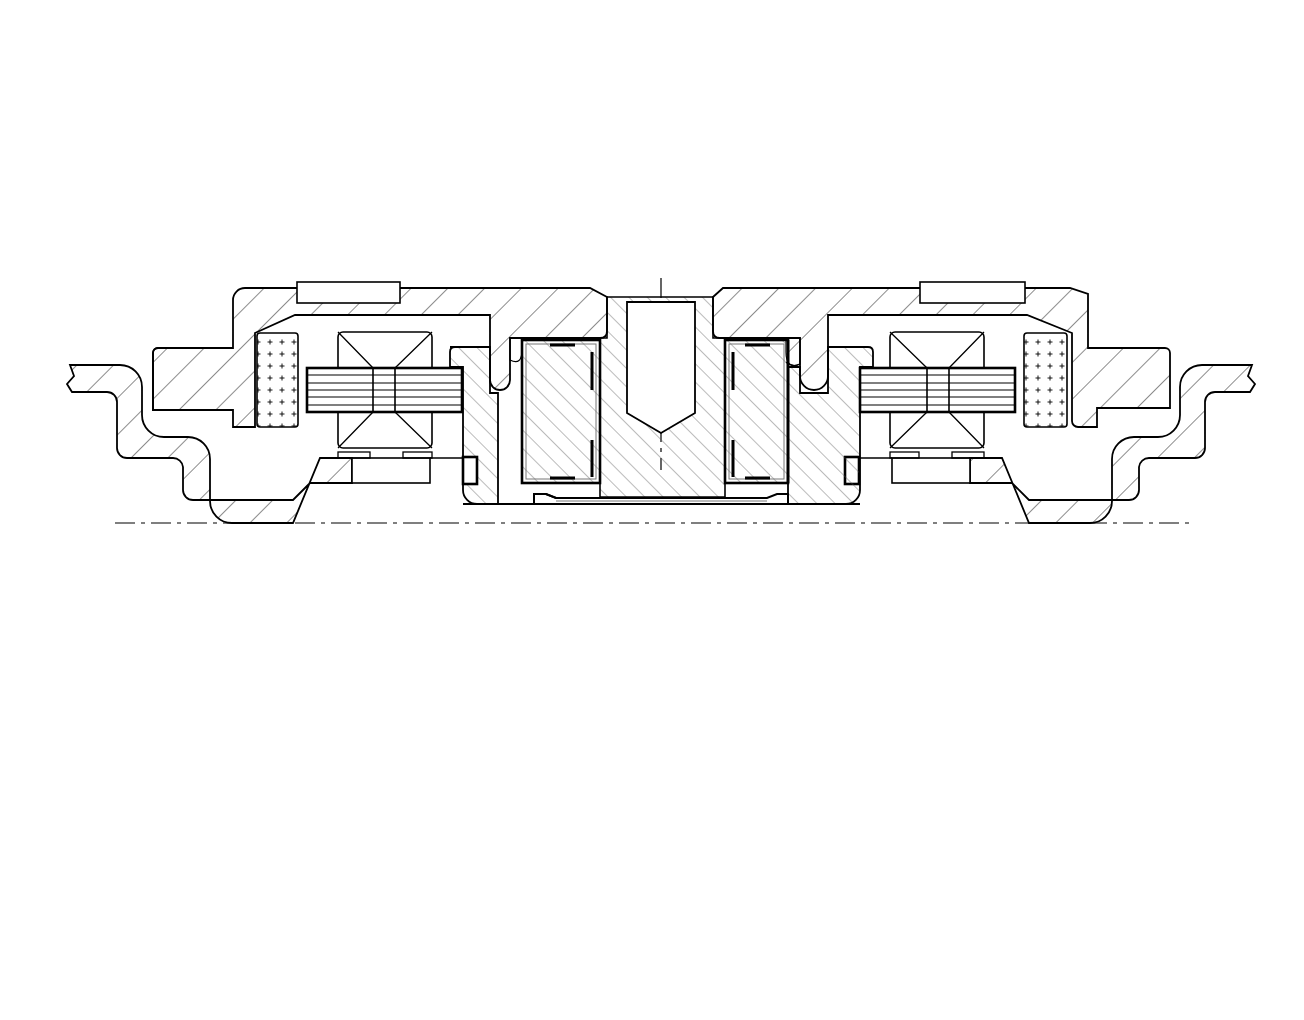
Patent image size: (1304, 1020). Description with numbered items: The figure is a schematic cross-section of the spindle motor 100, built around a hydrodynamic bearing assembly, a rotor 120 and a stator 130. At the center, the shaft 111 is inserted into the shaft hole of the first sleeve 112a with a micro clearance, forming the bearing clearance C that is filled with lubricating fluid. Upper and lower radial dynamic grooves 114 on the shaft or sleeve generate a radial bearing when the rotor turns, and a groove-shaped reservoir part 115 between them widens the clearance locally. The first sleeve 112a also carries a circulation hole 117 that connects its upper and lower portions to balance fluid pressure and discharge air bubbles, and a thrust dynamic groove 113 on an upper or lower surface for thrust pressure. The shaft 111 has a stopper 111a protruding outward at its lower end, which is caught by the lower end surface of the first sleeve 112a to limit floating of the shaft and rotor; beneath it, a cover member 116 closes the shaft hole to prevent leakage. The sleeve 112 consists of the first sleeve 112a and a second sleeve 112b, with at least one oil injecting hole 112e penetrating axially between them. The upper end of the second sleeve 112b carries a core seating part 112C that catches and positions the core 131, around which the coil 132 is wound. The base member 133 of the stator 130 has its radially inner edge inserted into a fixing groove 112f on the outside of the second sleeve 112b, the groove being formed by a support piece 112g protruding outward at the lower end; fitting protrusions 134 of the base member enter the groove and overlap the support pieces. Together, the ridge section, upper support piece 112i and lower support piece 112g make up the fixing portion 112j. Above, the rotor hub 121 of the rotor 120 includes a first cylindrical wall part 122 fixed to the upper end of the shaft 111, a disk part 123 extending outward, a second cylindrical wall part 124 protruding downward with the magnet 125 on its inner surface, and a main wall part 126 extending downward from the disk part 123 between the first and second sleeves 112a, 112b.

The spindle motor 100 is at (752, 77).
The shaft 111 is at (713, 478).
The stopper 111a is at (585, 506).
The sleeve 112 is at (738, 583).
The first sleeve 112a is at (760, 438).
The second sleeve 112b is at (790, 466).
The core seating part 112C is at (867, 357).
The oil injecting hole 112e is at (503, 452).
The fixing groove 112f is at (472, 468).
The support piece 112g is at (473, 497).
The upper support piece 112i is at (463, 388).
The fixing portion 112j is at (271, 585).
The thrust dynamic groove 113 is at (563, 338).
The radial dynamic groove 114 is at (743, 397).
The reservoir part 115 is at (620, 403).
The cover member 116 is at (647, 504).
The circulation hole 117 is at (788, 340).
The rotor 120 is at (1091, 283).
The rotor hub 121 is at (232, 195).
The first cylindrical wall part 122 is at (532, 308).
The disk part 123 is at (411, 286).
The second cylindrical wall part 124 is at (232, 349).
The magnet 125 is at (1062, 357).
The main wall part 126 is at (820, 362).
The stator 130 is at (953, 601).
The core 131 is at (982, 426).
The coil 132 is at (1003, 404).
The base member 133 is at (978, 479).
The fitting protrusion 134 is at (878, 504).
The bearing clearance C is at (558, 348).